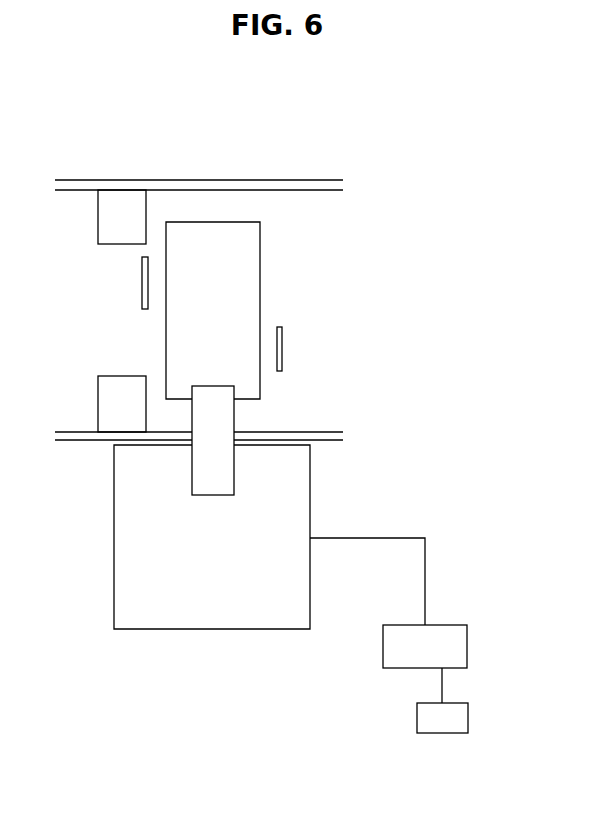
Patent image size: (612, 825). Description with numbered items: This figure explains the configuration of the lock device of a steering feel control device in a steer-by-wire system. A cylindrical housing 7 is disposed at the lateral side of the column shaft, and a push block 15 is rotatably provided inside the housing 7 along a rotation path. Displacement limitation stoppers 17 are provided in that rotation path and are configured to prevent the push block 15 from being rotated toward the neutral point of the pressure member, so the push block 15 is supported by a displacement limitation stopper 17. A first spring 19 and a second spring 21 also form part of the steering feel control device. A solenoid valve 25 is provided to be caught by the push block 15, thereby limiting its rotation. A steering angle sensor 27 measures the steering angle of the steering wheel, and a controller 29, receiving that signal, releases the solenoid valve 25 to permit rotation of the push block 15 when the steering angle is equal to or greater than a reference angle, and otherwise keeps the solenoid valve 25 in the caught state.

The housing 7 is at (263, 189).
The push block 15 is at (250, 272).
The displacement limitation stopper 17 is at (117, 200).
The first spring 19 is at (142, 283).
The second spring 21 is at (283, 348).
The solenoid valve 25 is at (118, 547).
The steering angle sensor 27 is at (466, 718).
The controller 29 is at (466, 647).